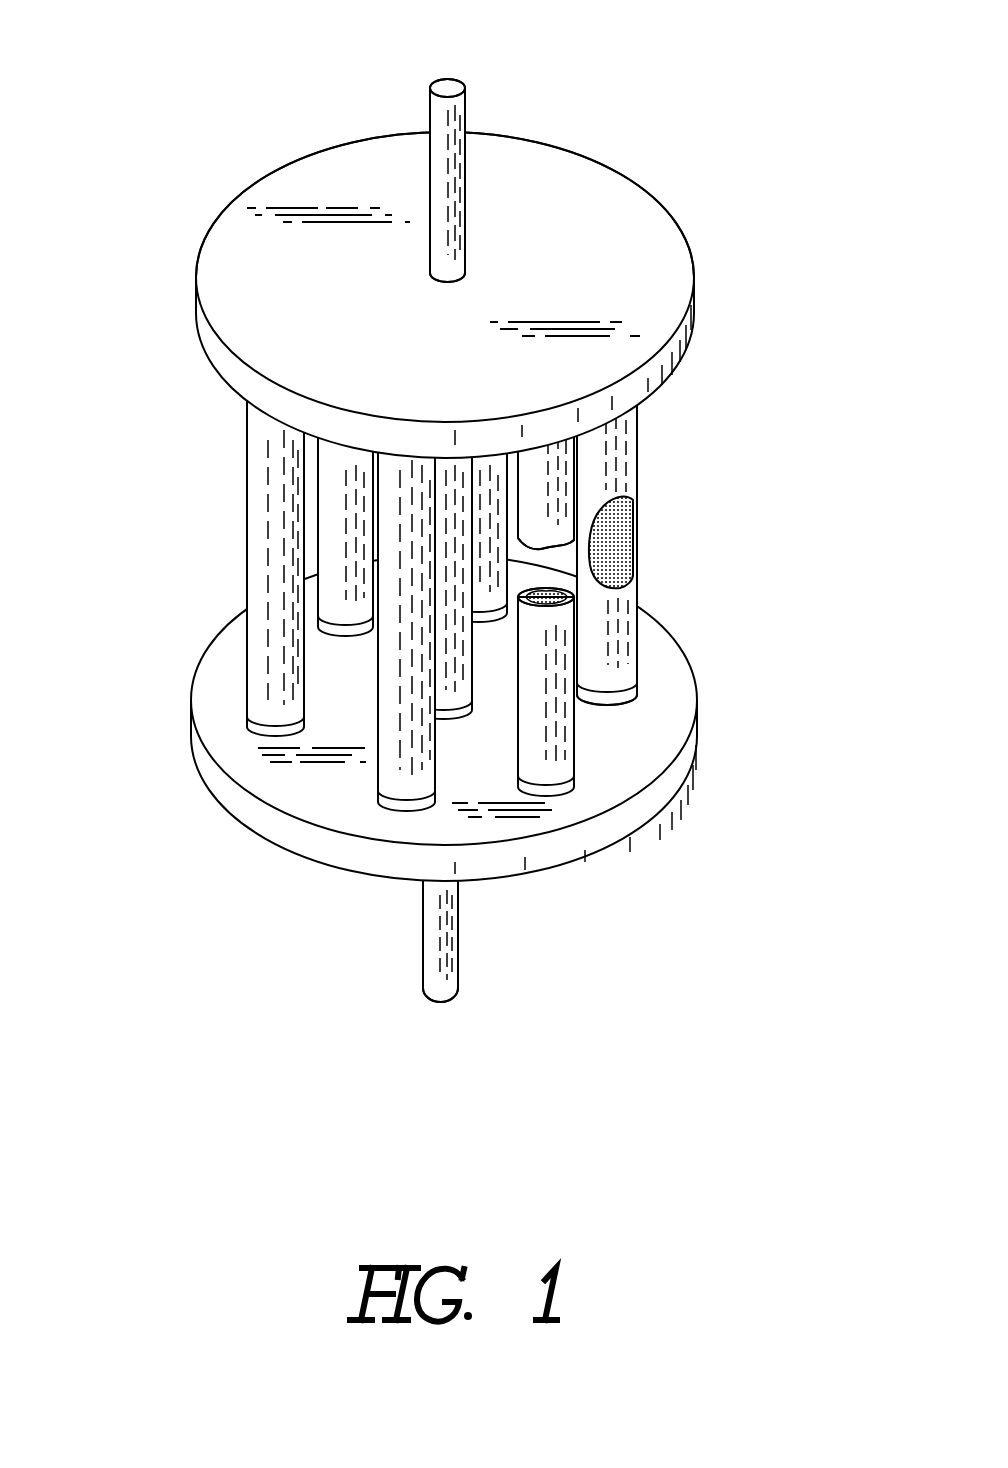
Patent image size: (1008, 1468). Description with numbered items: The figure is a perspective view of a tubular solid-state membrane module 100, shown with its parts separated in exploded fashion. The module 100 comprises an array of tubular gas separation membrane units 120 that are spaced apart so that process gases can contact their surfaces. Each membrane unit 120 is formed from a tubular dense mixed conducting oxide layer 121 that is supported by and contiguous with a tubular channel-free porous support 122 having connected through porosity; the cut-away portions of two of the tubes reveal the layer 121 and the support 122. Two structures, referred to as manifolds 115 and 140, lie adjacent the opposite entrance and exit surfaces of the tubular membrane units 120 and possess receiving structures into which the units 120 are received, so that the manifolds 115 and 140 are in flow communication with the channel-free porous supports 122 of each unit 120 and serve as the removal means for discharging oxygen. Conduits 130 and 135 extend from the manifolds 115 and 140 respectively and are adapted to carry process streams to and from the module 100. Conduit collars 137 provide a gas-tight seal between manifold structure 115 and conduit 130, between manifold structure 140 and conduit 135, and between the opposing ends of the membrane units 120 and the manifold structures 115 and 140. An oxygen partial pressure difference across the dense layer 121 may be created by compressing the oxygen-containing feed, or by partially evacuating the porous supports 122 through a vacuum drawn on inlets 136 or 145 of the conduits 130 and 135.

The tubular solid-state membrane module 100 is at (152, 645).
The manifold structure 115 is at (655, 373).
The gas separation membrane unit 120 is at (457, 568).
The dense mixed conducting oxide layer 121 is at (632, 572).
The channel-free porous support 122 is at (627, 530).
The conduit 130 is at (447, 197).
The conduit 135 is at (438, 945).
The inlet 136 is at (447, 83).
The conduit collar 137 is at (462, 275).
The manifold structure 140 is at (530, 881).
The inlet 145 is at (441, 1002).